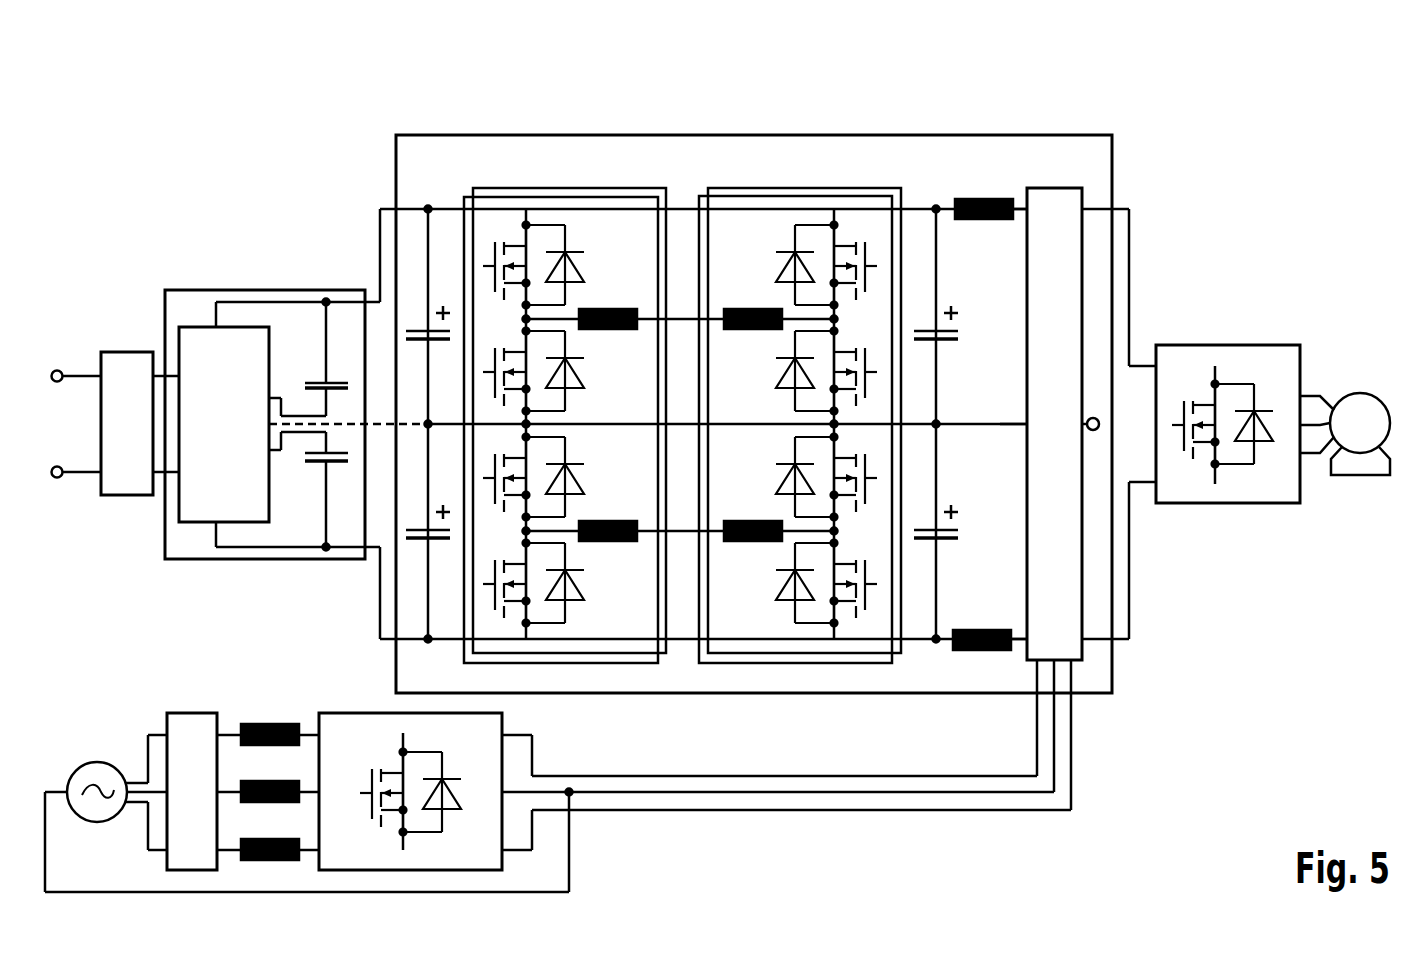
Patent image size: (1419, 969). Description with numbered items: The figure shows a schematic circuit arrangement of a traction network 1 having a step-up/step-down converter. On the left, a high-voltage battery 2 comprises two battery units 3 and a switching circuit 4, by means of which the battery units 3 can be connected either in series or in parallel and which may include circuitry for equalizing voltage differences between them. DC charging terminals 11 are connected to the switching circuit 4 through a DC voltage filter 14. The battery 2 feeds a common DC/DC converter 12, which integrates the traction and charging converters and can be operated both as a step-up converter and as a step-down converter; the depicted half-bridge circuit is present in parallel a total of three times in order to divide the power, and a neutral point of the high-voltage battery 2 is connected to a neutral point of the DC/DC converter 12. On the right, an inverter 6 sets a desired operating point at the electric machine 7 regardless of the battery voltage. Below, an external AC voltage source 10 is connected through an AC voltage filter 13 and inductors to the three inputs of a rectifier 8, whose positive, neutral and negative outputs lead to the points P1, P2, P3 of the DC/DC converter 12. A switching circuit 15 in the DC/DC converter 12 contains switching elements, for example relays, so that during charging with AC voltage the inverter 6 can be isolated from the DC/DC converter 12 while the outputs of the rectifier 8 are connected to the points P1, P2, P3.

The traction network 1 is at (572, 106).
The high-voltage battery 2 is at (270, 290).
The battery unit 3 is at (335, 380).
The switching circuit 4 is at (198, 327).
The inverter 6 is at (1225, 345).
The electric machine 7 is at (1357, 393).
The rectifier 8 is at (345, 713).
The AC voltage source 10 is at (97, 762).
The DC charging terminal 11 is at (57, 370).
The DC/DC converter 12 is at (770, 135).
The AC voltage filter 13 is at (189, 713).
The DC voltage filter 14 is at (126, 352).
The switching circuit 15 is at (1052, 187).
The point P1 is at (1021, 207).
The point P2 is at (1025, 422).
The point P3 is at (1022, 650).